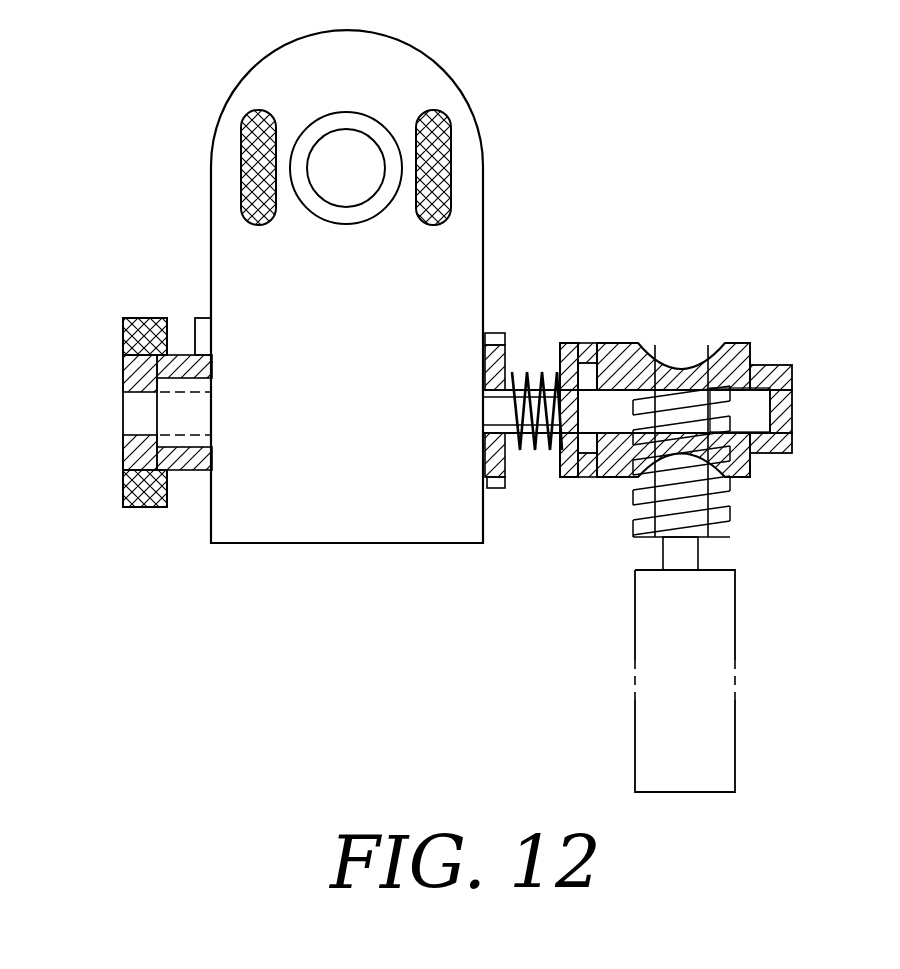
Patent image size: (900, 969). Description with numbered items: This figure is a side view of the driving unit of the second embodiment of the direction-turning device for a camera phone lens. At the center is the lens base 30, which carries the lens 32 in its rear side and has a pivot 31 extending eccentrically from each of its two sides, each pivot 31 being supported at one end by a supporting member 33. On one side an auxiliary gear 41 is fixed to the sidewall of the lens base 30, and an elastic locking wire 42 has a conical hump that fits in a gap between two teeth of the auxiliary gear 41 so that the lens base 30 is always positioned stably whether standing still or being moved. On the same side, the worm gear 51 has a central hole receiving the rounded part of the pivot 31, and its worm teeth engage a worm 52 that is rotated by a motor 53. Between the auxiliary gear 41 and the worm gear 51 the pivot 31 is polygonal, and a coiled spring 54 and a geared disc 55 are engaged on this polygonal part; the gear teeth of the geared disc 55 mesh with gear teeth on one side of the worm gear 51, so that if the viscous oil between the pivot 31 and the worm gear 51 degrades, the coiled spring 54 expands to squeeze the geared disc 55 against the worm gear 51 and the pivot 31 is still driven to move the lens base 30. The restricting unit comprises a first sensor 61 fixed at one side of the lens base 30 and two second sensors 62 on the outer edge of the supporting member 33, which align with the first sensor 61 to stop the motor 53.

The lens base 30 is at (465, 170).
The pivot 31 is at (193, 418).
The lens 32 is at (350, 153).
The supporting member 33 is at (133, 372).
The auxiliary gear 41 is at (497, 343).
The elastic locking wire 42 is at (495, 495).
The worm gear 51 is at (735, 350).
The worm 52 is at (710, 512).
The motor 53 is at (710, 618).
The coiled spring 54 is at (532, 372).
The geared disc 55 is at (565, 343).
The first sensor 61 is at (205, 333).
The second sensor 62 is at (133, 338).